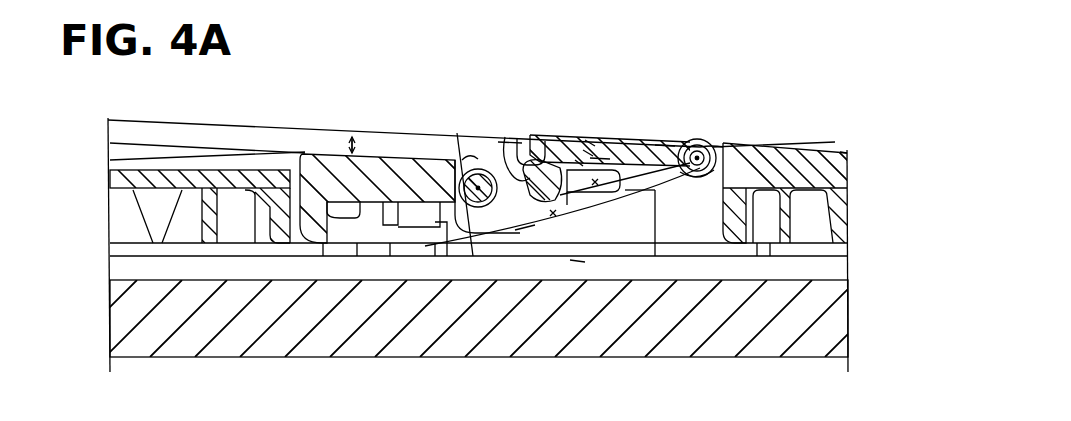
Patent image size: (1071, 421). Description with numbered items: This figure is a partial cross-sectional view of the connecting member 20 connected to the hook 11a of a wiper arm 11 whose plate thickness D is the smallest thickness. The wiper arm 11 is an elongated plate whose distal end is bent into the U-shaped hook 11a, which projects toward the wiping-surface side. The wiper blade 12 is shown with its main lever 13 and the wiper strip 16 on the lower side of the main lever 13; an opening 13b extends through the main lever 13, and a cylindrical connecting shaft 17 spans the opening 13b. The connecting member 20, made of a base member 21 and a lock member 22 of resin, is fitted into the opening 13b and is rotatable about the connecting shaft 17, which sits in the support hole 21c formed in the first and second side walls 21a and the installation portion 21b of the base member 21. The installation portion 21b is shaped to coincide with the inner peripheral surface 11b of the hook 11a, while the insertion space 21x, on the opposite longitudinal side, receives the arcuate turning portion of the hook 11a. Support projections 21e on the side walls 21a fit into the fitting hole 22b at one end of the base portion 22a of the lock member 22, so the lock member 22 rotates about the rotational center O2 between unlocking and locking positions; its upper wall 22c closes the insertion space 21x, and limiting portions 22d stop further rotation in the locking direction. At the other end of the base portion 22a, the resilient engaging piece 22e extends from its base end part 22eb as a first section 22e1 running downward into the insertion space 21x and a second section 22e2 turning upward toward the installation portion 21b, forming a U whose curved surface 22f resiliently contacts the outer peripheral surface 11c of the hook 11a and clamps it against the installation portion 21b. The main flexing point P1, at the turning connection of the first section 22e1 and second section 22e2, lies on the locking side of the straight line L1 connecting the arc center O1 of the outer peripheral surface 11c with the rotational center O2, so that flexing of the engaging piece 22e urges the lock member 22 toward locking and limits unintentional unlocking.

The wiper arm 11 is at (156, 122).
The hook 11a is at (521, 138).
The inner peripheral surface of the hook 11b is at (473, 256).
The outer peripheral surface of the hook 11c is at (504, 140).
The wiper blade 12 is at (843, 152).
The main lever 13 is at (829, 146).
The opening 13b is at (291, 170).
The wiper strip 16 is at (670, 357).
The connecting shaft 17 is at (468, 158).
The connecting member 20 is at (668, 133).
The base member 21 is at (496, 160).
The first and second side walls 21a is at (612, 200).
The installation portion 21b is at (418, 168).
The support hole 21c is at (435, 222).
The support projections 21e is at (696, 177).
The insertion space 21x is at (596, 190).
The lock member 22 is at (652, 140).
The base portion 22a is at (640, 195).
The fitting hole 22b is at (718, 147).
The upper wall 22c is at (600, 155).
The limiting portions 22d is at (586, 150).
The engaging piece 22e is at (545, 203).
The first section 22e1 is at (580, 280).
The second section 22e2 is at (578, 162).
The base end part 22eb is at (590, 140).
The curved surface 22f is at (522, 318).
The plate thickness D is at (355, 136).
The straight line L1 is at (812, 143).
The center of the arc O1 is at (467, 183).
The rotational center O2 is at (695, 144).
The main flexing point P1 is at (556, 214).